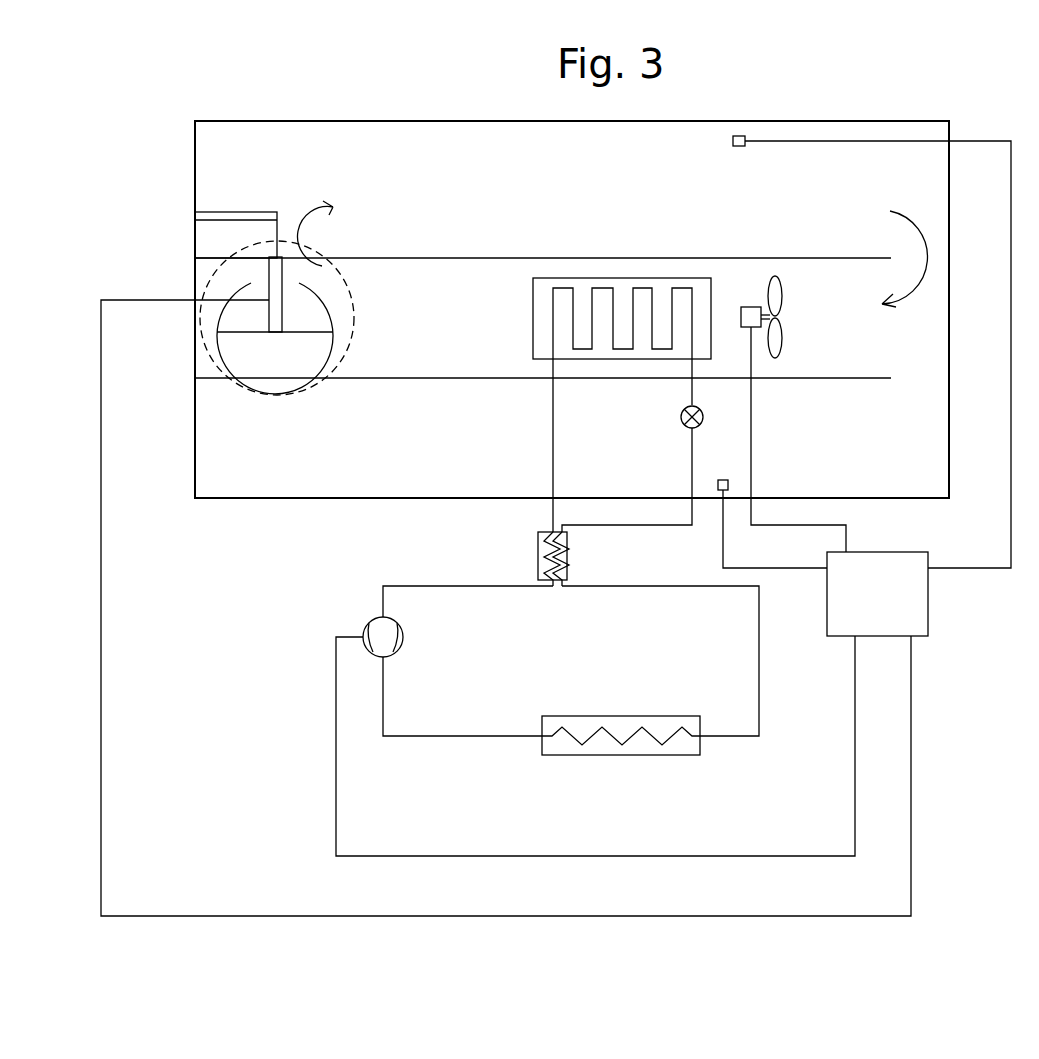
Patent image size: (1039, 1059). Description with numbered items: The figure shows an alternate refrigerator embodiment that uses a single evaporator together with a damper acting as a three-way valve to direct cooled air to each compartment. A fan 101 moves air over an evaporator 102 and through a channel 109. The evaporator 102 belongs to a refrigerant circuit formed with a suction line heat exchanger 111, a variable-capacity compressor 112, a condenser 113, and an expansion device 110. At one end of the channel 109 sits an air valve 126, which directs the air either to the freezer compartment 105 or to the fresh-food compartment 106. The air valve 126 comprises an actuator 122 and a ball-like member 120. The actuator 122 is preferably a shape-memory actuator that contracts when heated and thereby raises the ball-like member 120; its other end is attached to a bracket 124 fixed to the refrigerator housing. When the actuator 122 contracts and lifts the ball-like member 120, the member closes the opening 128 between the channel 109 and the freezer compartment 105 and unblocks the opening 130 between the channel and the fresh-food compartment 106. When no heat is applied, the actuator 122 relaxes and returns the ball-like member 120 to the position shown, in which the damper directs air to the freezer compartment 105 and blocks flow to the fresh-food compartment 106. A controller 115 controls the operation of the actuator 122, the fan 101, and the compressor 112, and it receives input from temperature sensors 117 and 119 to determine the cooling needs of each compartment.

The fan 101 is at (775, 338).
The evaporator 102 is at (550, 340).
The freezer compartment 105 is at (703, 247).
The fresh-food compartment 106 is at (480, 443).
The channel 109 is at (543, 318).
The expansion device 110 is at (697, 427).
The suction line heat exchanger 111 is at (542, 557).
The variable-capacity compressor 112 is at (402, 646).
The condenser 113 is at (582, 715).
The controller 115 is at (877, 594).
The temperature sensor 117 is at (858, 352).
The temperature sensor 119 is at (728, 482).
The ball-like member 120 is at (277, 383).
The actuator 122 is at (269, 285).
The bracket 124 is at (258, 216).
The air valve 126 is at (207, 283).
The opening 128 is at (290, 252).
The opening 130 is at (242, 392).